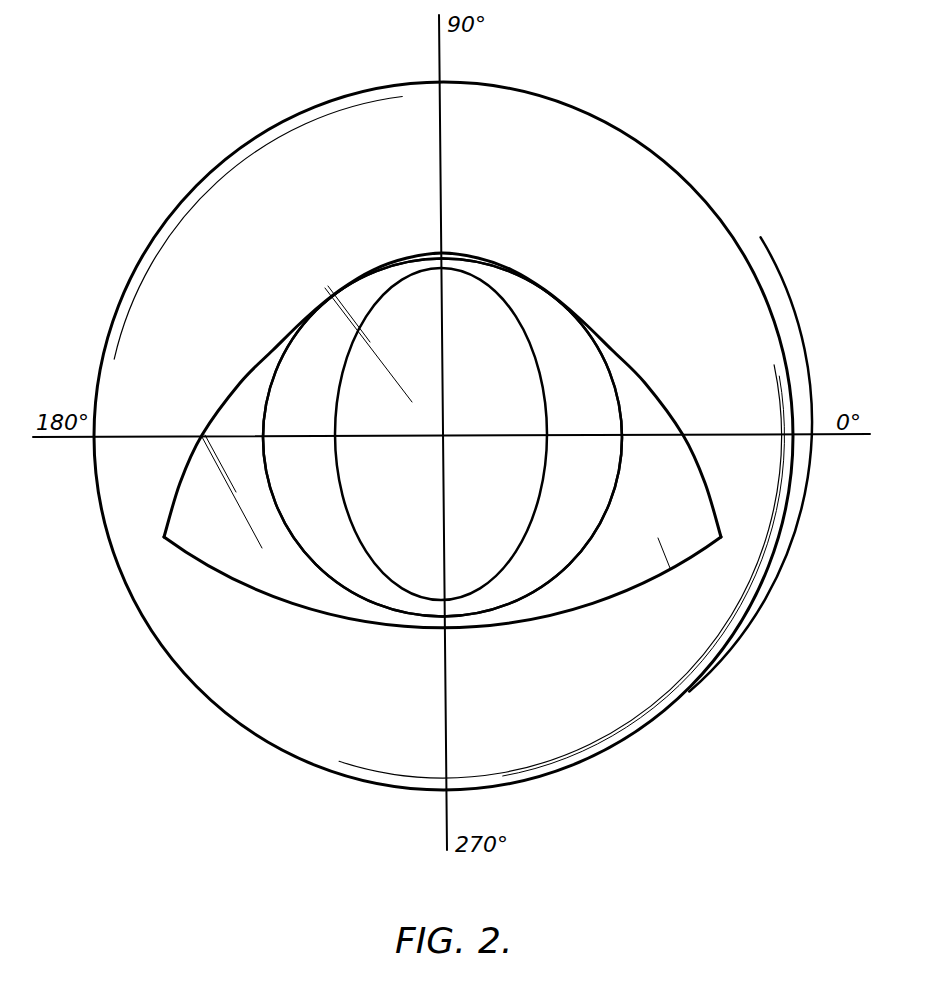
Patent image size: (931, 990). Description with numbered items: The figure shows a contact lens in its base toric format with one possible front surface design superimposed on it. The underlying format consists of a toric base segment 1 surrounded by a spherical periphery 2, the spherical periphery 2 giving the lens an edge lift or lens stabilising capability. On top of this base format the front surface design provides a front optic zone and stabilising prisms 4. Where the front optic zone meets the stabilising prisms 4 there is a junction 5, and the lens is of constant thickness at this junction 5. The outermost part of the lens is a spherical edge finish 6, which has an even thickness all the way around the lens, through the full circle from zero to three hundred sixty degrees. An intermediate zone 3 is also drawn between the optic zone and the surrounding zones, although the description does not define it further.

The toric base segment 1 is at (483, 318).
The spherical periphery 2 is at (737, 602).
The intermediate annular zone 3 is at (510, 588).
The stabilising prisms 4 is at (677, 507).
The junction 5 is at (620, 403).
The spherical edge finish 6 is at (702, 678).